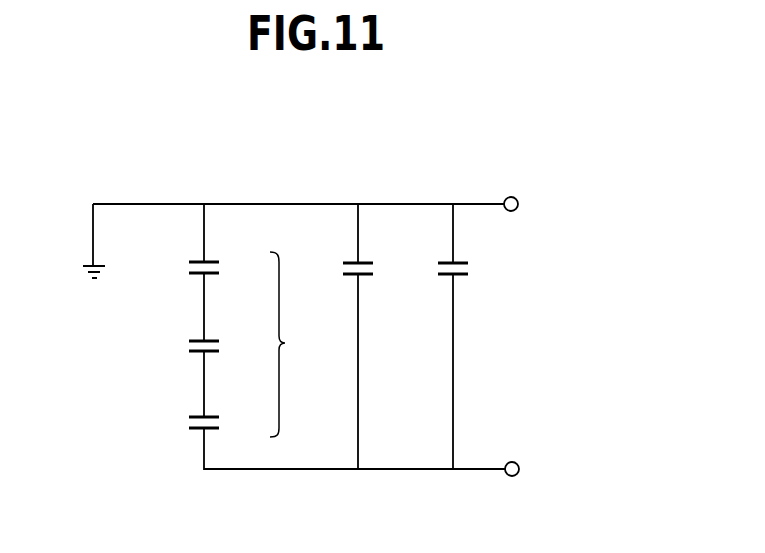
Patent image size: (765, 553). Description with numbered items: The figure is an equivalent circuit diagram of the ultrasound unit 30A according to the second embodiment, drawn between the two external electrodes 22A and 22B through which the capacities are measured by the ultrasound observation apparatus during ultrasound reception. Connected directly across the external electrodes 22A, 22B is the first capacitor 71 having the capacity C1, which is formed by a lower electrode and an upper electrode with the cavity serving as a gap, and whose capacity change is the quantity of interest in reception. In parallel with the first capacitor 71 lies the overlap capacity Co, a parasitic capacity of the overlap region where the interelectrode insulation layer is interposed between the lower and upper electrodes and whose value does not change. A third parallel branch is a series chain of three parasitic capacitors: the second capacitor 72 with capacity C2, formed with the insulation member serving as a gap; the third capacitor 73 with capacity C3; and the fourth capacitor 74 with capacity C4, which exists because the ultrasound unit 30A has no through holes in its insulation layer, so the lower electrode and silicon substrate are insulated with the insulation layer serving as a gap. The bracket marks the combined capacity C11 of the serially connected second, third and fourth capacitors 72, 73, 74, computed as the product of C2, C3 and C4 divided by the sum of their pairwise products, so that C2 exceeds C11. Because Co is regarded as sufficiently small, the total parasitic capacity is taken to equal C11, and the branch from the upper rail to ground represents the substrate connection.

The ultrasound unit 30A is at (311, 167).
The external electrode 22B is at (510, 197).
The external electrode 22A is at (513, 476).
The first capacitor 71 is at (349, 258).
The second capacitor 72 is at (195, 253).
The third capacitor 73 is at (195, 331).
The fourth capacitor 74 is at (195, 408).
The capacity of first capacitor C1 is at (406, 270).
The capacity of second capacitor C2 is at (251, 270).
The capacity of third capacitor C3 is at (251, 346).
The capacity of fourth capacitor C4 is at (251, 423).
The combined capacity C11 is at (301, 344).
The overlap capacity Co is at (476, 270).